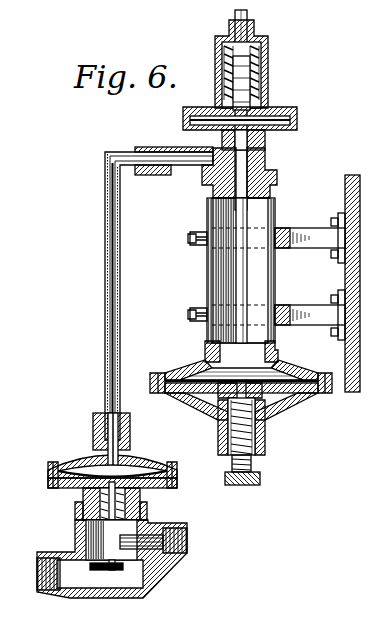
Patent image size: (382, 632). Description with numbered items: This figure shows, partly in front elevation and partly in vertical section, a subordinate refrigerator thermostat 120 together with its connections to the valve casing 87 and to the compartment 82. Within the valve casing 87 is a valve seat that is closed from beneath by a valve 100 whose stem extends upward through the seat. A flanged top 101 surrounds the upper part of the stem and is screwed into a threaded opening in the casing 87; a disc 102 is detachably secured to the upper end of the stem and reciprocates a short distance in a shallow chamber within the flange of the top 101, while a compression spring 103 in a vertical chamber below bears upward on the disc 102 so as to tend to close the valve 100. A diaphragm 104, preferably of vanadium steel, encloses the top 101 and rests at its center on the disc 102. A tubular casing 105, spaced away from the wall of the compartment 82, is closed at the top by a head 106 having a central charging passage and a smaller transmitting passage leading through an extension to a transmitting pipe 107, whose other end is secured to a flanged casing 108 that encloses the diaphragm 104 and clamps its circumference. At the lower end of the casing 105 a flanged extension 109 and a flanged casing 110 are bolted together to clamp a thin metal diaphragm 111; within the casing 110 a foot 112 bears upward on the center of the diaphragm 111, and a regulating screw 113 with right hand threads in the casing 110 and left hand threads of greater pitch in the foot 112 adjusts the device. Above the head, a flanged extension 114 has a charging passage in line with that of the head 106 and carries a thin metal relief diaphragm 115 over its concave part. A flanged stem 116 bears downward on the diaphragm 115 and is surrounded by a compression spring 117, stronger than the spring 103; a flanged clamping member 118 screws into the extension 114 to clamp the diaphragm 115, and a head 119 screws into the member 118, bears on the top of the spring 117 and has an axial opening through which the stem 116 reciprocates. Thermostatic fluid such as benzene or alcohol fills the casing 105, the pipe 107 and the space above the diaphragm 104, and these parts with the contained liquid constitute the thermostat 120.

The compartment 82 is at (346, 268).
The valve casing 87 is at (152, 585).
The valve 100 is at (106, 574).
The flanged top 101 is at (53, 480).
The disc 102 is at (140, 497).
The compression spring 103 is at (77, 511).
The diaphragm 104 is at (136, 471).
The tubular casing 105 is at (208, 276).
The head 106 is at (278, 180).
The transmitting pipe 107 is at (117, 282).
The flanged casing 108 is at (95, 461).
The flanged extension 109 is at (191, 373).
The flanged casing 110 is at (301, 394).
The thin metal diaphragm 111 is at (283, 379).
The foot 112 is at (250, 406).
The regulating screw 113 is at (260, 480).
The flanged extension 114 is at (279, 131).
The relief diaphragm 115 is at (206, 118).
The flanged stem 116 is at (252, 78).
The compression spring 117 is at (260, 62).
The flanged clamping member 118 is at (264, 91).
The head 119 is at (235, 26).
The refrigerator thermostat 120 is at (105, 208).